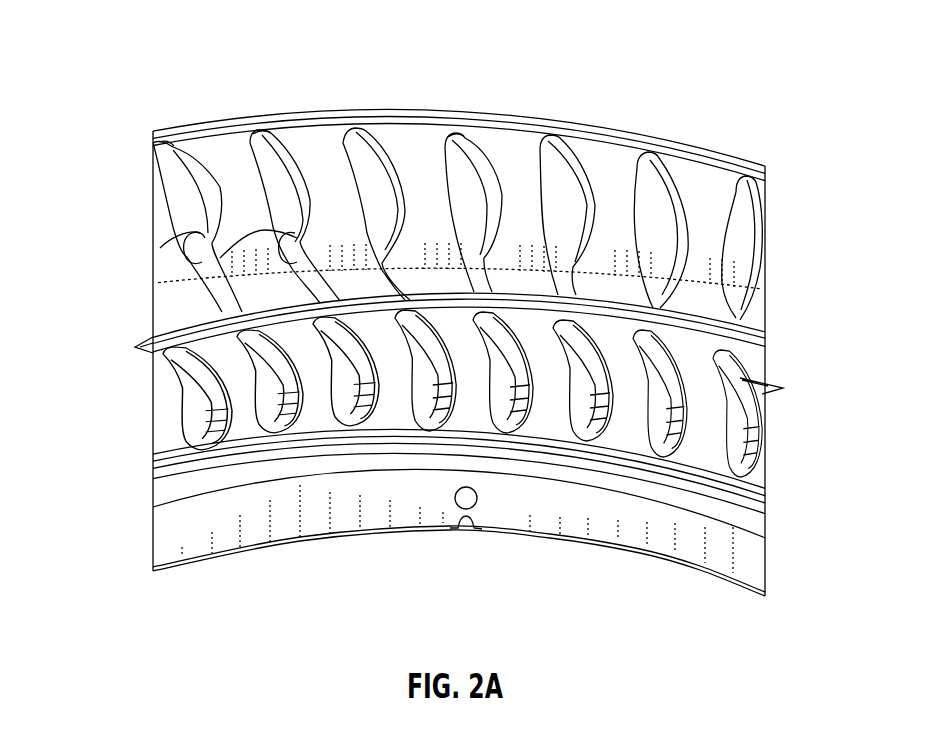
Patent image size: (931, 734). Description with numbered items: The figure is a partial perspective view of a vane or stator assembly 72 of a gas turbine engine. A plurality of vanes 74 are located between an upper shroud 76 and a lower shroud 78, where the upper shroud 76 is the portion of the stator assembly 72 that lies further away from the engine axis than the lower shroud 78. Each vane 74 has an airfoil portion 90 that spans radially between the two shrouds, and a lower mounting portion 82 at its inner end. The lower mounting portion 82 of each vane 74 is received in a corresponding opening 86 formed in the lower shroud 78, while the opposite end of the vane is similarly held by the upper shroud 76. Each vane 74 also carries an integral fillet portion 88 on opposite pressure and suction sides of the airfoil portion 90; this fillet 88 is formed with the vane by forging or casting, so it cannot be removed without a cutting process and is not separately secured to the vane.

The stator assembly 72 is at (177, 34).
The vane 74 is at (568, 204).
The upper shroud 76 is at (401, 113).
The lower shroud 78 is at (748, 481).
The lower mounting portion 82 is at (645, 468).
The opening 86 is at (192, 425).
The integral fillet portion 88 is at (178, 150).
The airfoil portion 90 is at (160, 248).